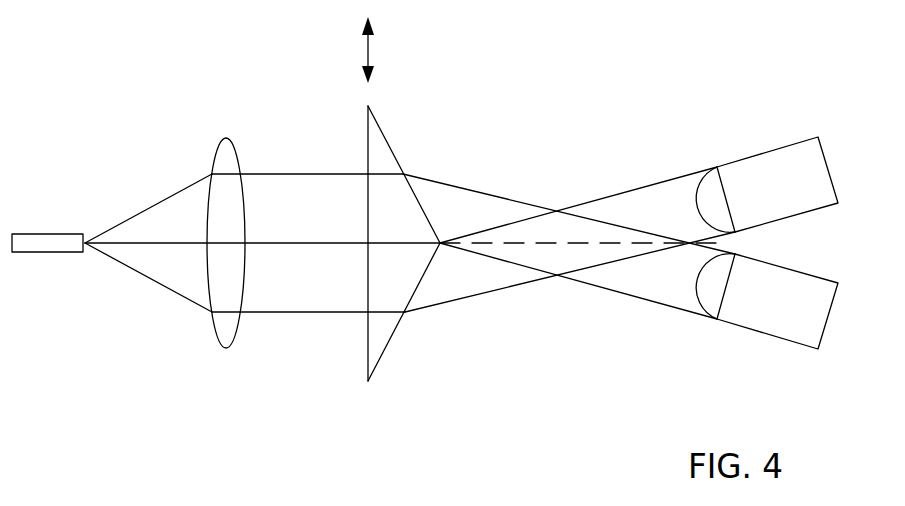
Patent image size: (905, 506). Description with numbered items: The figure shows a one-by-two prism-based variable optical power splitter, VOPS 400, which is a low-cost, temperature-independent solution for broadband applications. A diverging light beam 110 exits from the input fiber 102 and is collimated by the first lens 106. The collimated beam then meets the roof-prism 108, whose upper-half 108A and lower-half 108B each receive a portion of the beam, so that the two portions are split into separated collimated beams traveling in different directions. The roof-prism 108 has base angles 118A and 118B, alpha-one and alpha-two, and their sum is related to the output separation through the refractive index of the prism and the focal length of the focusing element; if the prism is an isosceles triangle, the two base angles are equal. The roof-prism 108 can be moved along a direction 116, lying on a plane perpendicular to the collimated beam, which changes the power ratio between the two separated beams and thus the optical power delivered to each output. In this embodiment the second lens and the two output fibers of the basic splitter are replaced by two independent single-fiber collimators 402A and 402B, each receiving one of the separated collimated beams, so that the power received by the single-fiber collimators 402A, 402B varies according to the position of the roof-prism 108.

The VOPS 400 is at (178, 60).
The input fiber 102 is at (33, 234).
The diverging light beam 110 is at (185, 188).
The first lens 106 is at (228, 137).
The direction 116 is at (372, 58).
The roof-prism 108 is at (400, 165).
The base angle 118A is at (378, 137).
The base angle 118B is at (377, 347).
The upper-half of roof-prism 108A is at (418, 236).
The lower-half of roof-prism 108B is at (418, 270).
The single-fiber collimator 402A is at (800, 196).
The single-fiber collimator 402B is at (800, 310).